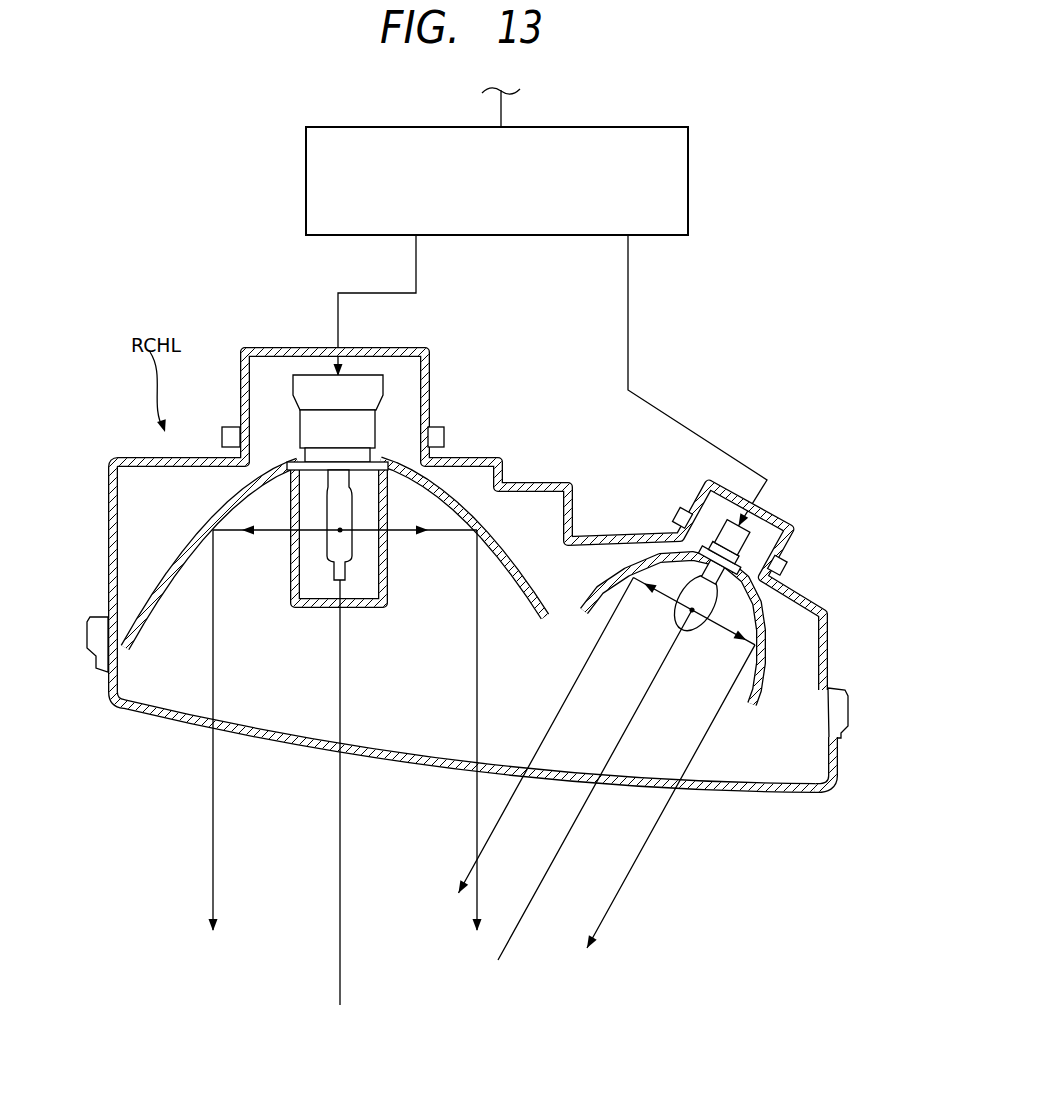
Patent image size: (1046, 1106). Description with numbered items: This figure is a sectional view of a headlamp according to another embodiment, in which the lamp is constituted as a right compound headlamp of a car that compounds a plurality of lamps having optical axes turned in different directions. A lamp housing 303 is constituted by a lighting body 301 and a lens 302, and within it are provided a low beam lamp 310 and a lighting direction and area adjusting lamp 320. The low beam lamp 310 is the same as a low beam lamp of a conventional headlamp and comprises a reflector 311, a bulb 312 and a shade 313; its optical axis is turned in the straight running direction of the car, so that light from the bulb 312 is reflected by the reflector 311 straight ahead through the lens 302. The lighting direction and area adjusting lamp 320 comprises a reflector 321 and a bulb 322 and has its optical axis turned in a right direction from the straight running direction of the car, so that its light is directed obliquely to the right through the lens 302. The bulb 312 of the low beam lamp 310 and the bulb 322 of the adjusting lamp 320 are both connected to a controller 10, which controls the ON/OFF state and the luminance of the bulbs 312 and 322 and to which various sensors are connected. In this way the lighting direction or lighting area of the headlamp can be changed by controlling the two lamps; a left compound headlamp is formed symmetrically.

The controller 10 is at (660, 121).
The lighting body 301 is at (498, 457).
The lens 302 is at (382, 762).
The lamp housing 303 is at (787, 755).
The low beam lamp 310 is at (335, 705).
The reflector 311 is at (543, 618).
The bulb 312 is at (327, 557).
The shade 313 is at (378, 610).
The lighting direction and area adjusting lamp 320 is at (610, 751).
The reflector 321 is at (589, 614).
The bulb 322 is at (677, 613).